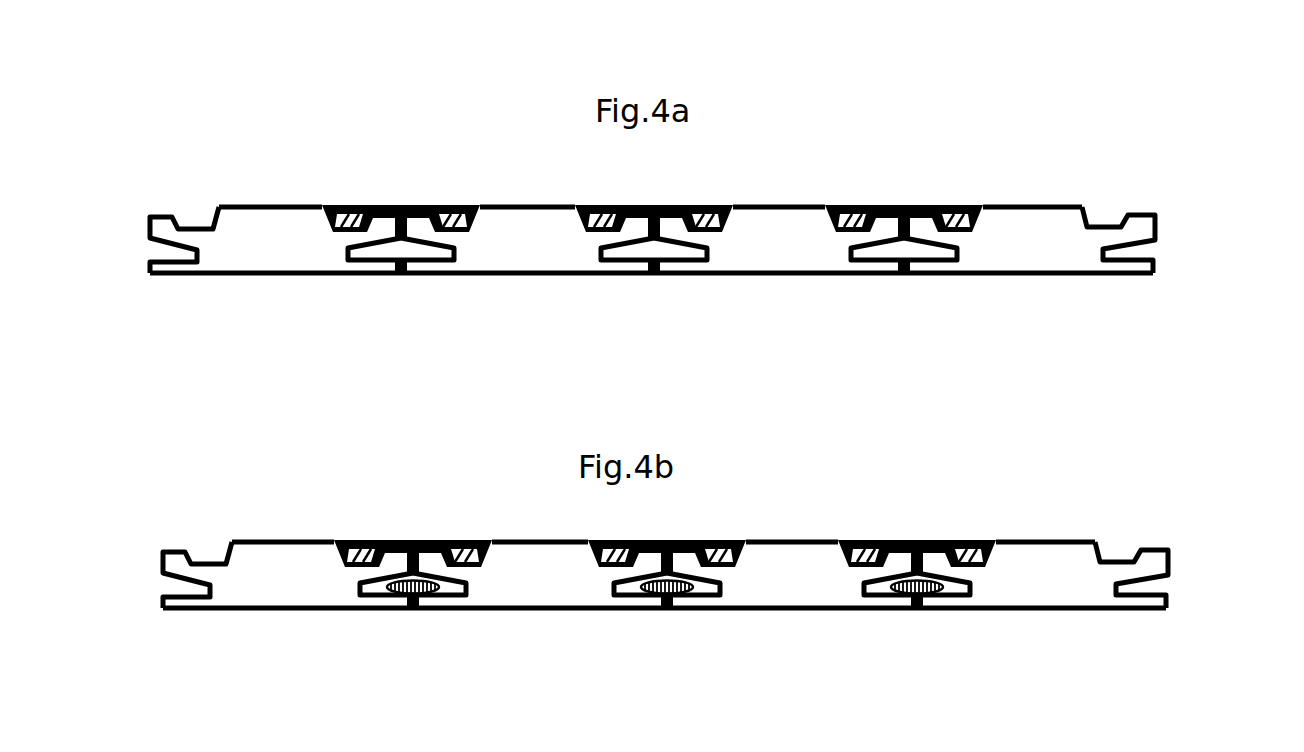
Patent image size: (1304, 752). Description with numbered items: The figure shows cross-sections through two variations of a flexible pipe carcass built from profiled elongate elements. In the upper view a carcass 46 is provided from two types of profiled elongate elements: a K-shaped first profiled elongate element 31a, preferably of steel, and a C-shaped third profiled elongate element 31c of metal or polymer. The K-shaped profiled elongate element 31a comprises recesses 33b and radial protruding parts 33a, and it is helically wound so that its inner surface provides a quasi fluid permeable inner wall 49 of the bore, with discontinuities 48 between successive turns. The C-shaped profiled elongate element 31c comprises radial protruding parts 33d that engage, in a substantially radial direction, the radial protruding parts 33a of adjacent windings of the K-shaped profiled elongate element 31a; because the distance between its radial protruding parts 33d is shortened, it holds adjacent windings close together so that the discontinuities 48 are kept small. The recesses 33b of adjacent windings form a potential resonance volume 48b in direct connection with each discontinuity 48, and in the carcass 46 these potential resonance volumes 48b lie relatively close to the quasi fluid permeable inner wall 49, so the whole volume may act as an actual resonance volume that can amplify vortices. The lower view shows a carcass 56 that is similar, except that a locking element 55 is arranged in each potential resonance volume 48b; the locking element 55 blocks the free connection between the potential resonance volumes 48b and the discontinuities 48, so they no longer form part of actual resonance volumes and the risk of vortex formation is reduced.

In FIG. 4a, the first profiled elongate element 31a is at (270, 222).
In FIG. 4b, the first profiled elongate element 31a is at (287, 567).
In FIG. 4a, the third profiled elongate element 31c is at (888, 204).
In FIG. 4b, the third profiled elongate element 31c is at (408, 545).
In FIG. 4a, the radial protruding parts 33a is at (1140, 222).
In FIG. 4a, the recesses 33b is at (155, 247).
In FIG. 4a, the radial protruding parts 33d is at (843, 205).
In FIG. 4a, the carcass 46 is at (668, 224).
In FIG. 4a, the discontinuities 48 is at (395, 278).
In FIG. 4b, the discontinuities 48 is at (413, 612).
In FIG. 4a, the potential resonance volume 48b is at (405, 248).
In FIG. 4a, the quasi fluid permeable inner wall 49 is at (670, 282).
In FIG. 4b, the locking element 55 is at (403, 597).
In FIG. 4b, the carcass 56 is at (683, 538).